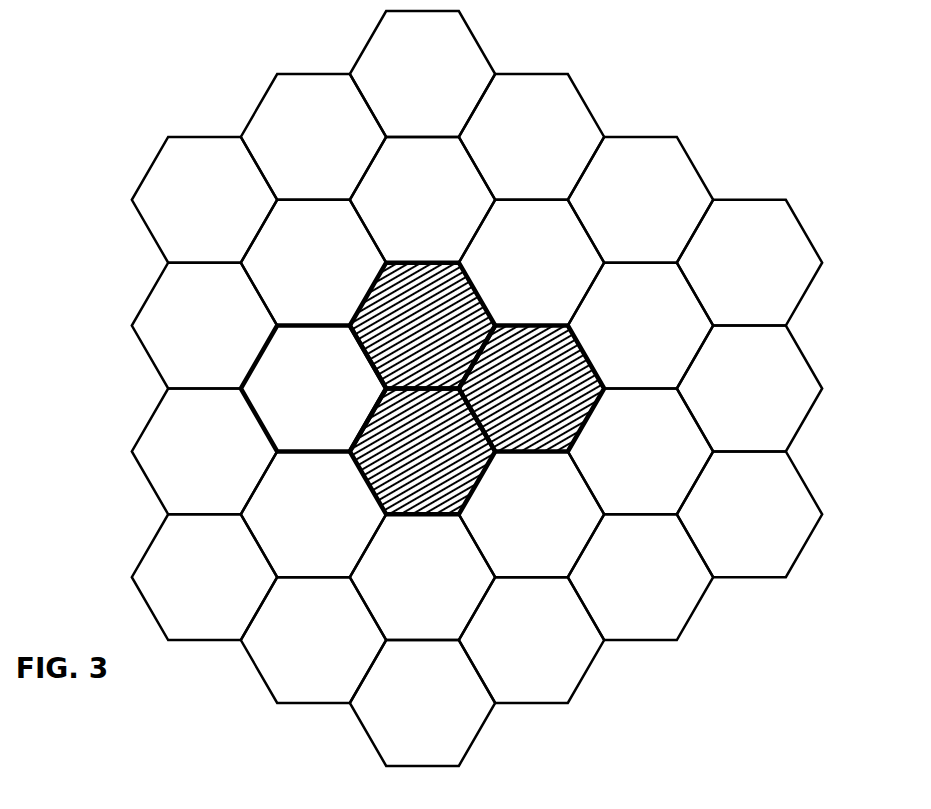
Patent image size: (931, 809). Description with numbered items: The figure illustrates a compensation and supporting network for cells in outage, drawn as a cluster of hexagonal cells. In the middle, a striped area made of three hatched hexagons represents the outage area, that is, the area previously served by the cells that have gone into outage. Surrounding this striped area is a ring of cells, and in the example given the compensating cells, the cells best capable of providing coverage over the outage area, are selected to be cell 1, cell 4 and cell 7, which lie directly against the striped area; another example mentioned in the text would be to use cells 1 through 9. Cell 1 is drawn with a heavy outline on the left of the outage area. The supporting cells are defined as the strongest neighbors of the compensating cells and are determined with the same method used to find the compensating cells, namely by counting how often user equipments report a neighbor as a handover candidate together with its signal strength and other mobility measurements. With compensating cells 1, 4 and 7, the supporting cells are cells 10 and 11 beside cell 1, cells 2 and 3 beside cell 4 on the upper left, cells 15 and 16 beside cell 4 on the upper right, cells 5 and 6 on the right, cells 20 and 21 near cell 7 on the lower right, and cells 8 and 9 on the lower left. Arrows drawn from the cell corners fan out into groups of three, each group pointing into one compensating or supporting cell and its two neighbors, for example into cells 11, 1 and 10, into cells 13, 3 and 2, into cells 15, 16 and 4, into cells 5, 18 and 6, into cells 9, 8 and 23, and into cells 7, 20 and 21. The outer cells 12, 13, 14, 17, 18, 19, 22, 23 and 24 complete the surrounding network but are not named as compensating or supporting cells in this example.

The compensating cell 1 is at (313, 389).
The supporting cell 2 is at (313, 263).
The supporting cell 3 is at (422, 200).
The compensating cell 4 is at (531, 263).
The supporting cell 5 is at (640, 326).
The supporting cell 6 is at (640, 452).
The compensating cell 7 is at (531, 514).
The supporting cell 8 is at (422, 577).
The supporting cell 9 is at (313, 514).
The supporting cell 10 is at (204, 452).
The supporting cell 11 is at (204, 326).
The cell 12 is at (204, 200).
The cell 13 is at (313, 137).
The cell 14 is at (422, 74).
The supporting cell 15 is at (531, 137).
The supporting cell 16 is at (640, 200).
The cell 17 is at (749, 263).
The cell 18 is at (749, 389).
The cell 19 is at (749, 514).
The supporting cell 20 is at (640, 577).
The supporting cell 21 is at (531, 640).
The cell 22 is at (422, 703).
The cell 23 is at (313, 640).
The cell 24 is at (204, 577).